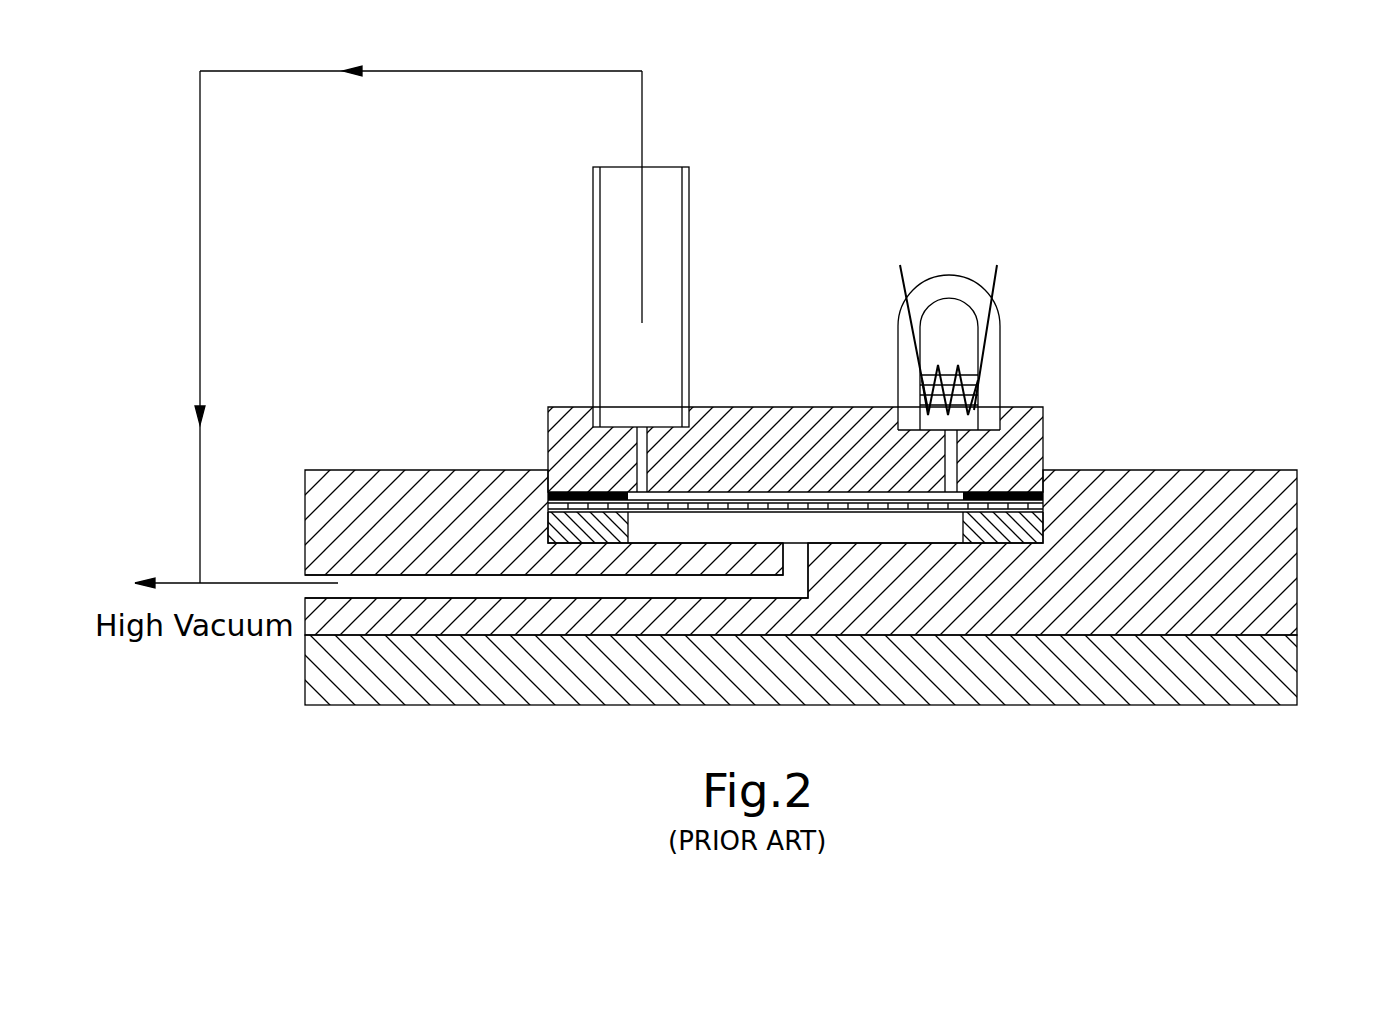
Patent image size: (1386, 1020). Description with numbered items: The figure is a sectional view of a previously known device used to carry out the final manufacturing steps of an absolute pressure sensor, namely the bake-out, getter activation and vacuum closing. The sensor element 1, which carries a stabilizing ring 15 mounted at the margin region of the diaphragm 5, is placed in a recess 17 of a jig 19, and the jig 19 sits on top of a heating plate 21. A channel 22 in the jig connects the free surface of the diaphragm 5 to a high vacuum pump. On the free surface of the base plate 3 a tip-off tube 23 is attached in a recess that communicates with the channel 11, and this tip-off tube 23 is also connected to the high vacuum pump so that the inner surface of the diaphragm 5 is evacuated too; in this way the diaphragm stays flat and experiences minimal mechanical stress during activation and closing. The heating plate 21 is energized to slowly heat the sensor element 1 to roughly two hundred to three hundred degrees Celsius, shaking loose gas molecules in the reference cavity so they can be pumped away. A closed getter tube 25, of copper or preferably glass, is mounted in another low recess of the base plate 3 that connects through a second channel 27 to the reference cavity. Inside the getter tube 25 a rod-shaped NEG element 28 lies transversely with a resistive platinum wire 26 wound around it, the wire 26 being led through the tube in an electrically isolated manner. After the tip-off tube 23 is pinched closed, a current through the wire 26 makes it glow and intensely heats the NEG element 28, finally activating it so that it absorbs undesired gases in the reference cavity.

The sensor element 1 is at (814, 368).
The base plate 3 is at (1028, 438).
The diaphragm 5 is at (1048, 503).
The channel 11 is at (648, 452).
The stabilizing ring 15 is at (995, 530).
The recess 17 is at (546, 490).
The jig 19 is at (1280, 513).
The heating plate 21 is at (1260, 676).
The channel 22 is at (367, 583).
The tip-off tube 23 is at (620, 338).
The getter tube 25 is at (993, 330).
The resistive inert wire 26 is at (997, 280).
The second channel 27 is at (947, 458).
The NEG element 28 is at (978, 392).